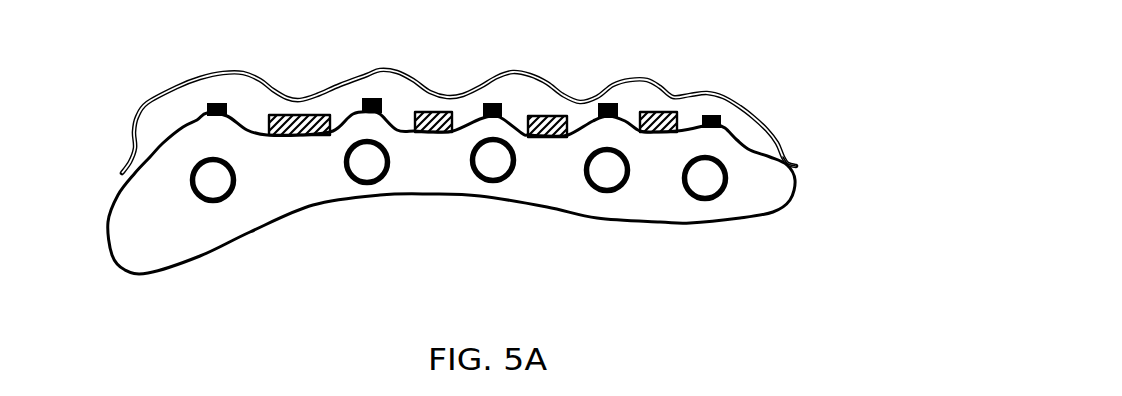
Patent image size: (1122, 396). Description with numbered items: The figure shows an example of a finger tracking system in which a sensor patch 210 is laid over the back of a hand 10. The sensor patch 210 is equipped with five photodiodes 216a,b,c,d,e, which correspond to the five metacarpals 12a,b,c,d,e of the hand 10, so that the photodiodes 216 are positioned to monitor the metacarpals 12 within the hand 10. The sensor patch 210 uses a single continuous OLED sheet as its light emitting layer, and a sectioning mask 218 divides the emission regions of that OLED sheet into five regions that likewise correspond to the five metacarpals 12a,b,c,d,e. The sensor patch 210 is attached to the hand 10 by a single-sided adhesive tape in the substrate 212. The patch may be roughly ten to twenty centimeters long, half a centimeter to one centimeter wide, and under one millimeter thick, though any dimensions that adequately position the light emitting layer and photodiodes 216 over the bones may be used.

The hand 10 is at (118, 228).
The metacarpals 12 is at (394, 229).
The five metacarpals 12a,b,c,d,e is at (705, 199).
The sensor patch 210 is at (745, 122).
The substrate 212 is at (792, 162).
The photodiodes 216 is at (583, 82).
The five photodiodes 216a,b,c,d,e is at (217, 103).
The sectioning mask 218 is at (300, 135).